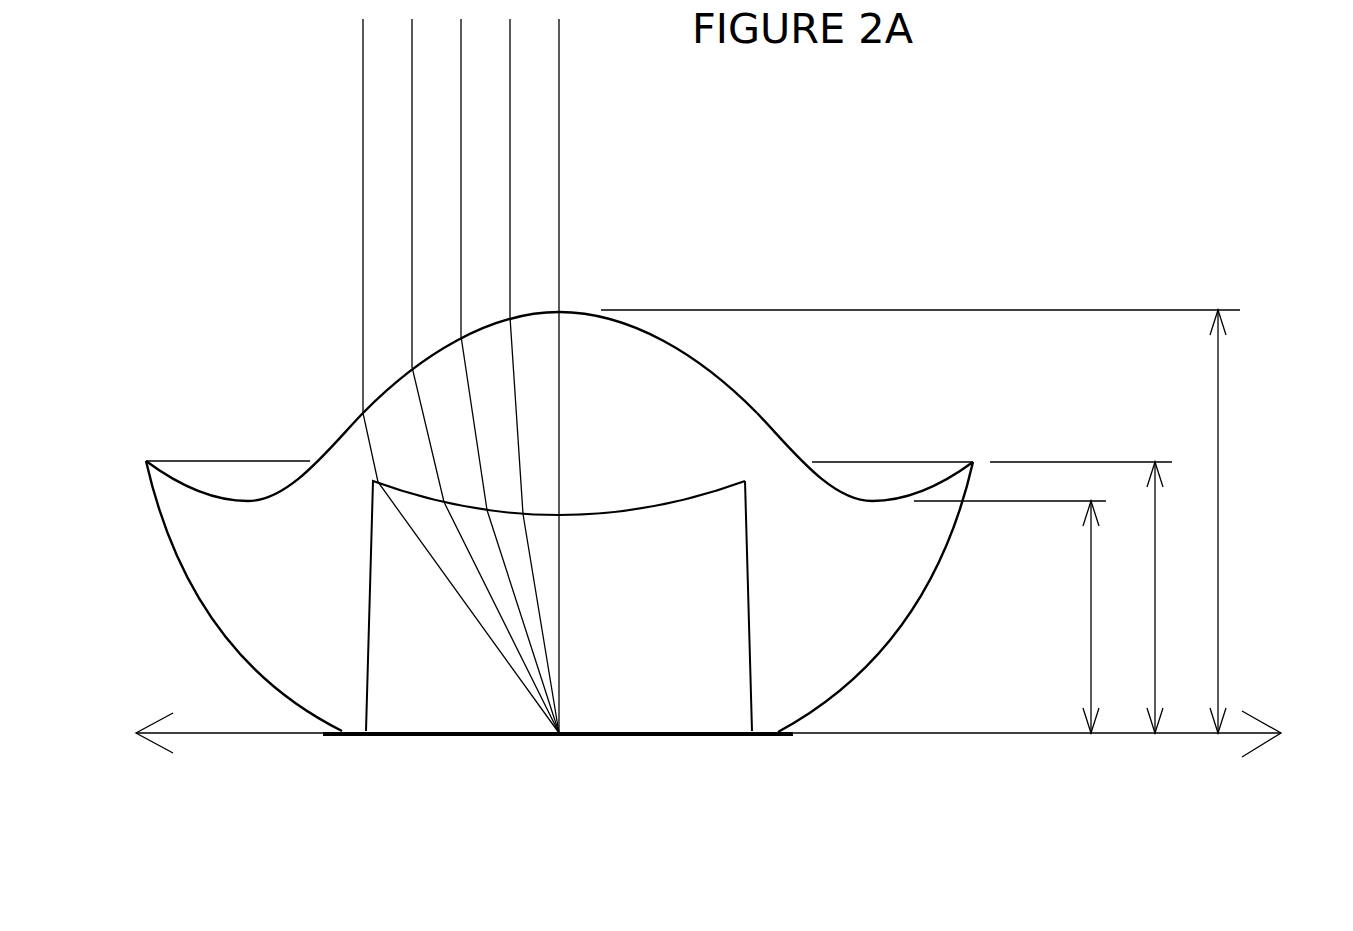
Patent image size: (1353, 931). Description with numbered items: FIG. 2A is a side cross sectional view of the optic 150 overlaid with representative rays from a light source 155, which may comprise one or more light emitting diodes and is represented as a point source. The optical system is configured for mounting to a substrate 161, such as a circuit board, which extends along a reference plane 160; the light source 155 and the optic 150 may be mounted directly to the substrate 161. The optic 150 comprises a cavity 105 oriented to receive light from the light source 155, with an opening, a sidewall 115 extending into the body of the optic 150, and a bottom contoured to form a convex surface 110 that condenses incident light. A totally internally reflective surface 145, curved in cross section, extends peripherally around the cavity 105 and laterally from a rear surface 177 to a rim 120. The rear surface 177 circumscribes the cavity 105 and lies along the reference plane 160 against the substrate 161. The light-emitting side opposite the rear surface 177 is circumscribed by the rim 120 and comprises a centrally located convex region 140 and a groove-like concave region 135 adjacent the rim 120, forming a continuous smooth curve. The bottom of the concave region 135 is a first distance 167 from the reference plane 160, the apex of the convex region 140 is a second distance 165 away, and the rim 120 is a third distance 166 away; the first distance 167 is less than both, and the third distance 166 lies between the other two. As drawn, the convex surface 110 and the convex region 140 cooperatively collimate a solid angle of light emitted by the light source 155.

The cavity 105 is at (558, 811).
The convex surface 110 is at (559, 606).
The sidewall 115 is at (738, 567).
The rim 120 is at (926, 455).
The concave region 135 is at (869, 470).
The convex region 140 is at (662, 316).
The totally internally reflective surface 145 is at (189, 591).
The optic 150 is at (571, 454).
The light source 155 is at (557, 744).
The reference plane 160 is at (982, 733).
The substrate 161 is at (660, 738).
The second distance 165 is at (1219, 385).
The third distance 166 is at (1155, 508).
The first distance 167 is at (1090, 565).
The rear surface 177 is at (344, 709).